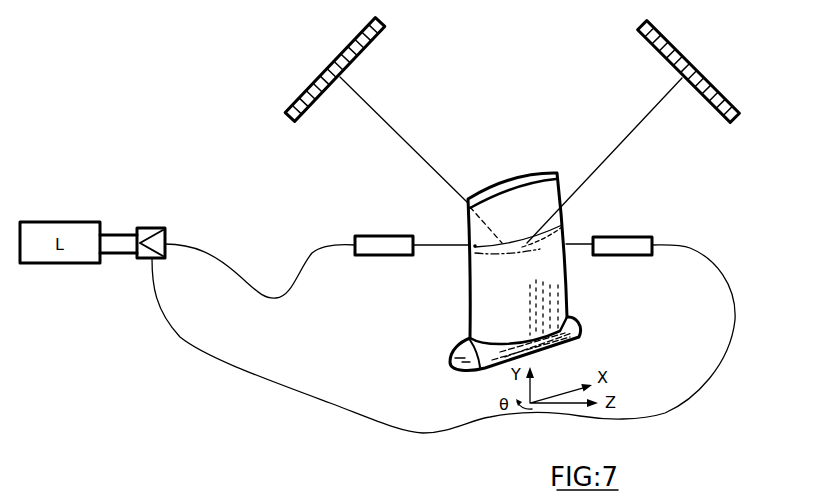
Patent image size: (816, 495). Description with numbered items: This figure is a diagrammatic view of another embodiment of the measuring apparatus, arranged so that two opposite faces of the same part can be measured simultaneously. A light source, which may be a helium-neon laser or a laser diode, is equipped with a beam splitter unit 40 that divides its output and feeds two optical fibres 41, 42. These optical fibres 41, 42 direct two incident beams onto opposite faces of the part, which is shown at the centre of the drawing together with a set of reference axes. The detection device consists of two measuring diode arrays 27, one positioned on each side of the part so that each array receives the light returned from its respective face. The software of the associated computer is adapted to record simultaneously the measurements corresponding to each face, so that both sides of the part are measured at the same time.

The measuring diode array 27 is at (346, 59).
The beam splitter unit 40 is at (142, 232).
The optical fibre 41 is at (276, 298).
The optical fibre 42 is at (720, 273).